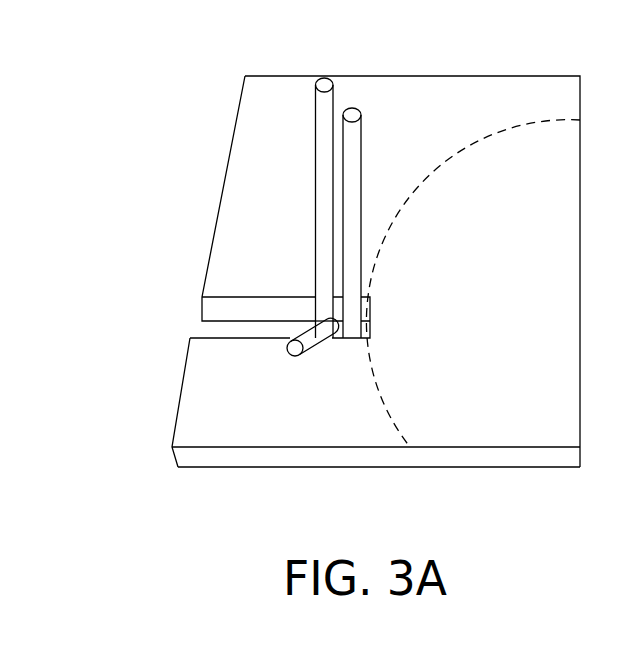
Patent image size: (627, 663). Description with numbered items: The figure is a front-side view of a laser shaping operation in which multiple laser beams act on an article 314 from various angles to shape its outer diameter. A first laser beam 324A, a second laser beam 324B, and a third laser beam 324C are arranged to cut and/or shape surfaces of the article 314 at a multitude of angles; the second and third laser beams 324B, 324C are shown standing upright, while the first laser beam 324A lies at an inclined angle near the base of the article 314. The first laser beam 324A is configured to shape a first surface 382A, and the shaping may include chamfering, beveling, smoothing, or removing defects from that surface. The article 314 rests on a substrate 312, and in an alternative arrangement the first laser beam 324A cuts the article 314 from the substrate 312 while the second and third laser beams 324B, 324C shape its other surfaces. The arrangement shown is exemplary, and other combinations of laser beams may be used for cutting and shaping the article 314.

The substrate 312 is at (376, 423).
The article 314 is at (534, 197).
The first laser beam 324A is at (307, 343).
The second laser beam 324B is at (257, 208).
The third laser beam 324C is at (380, 139).
The first surface 382A is at (347, 301).